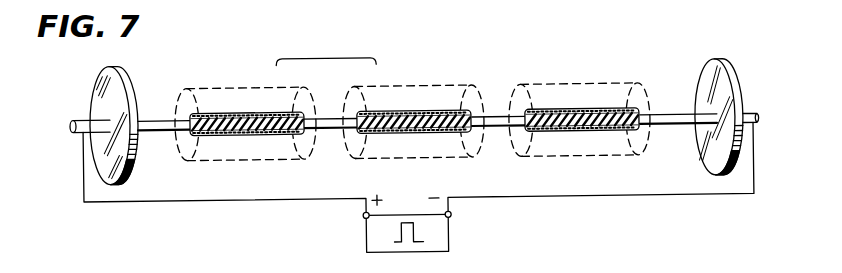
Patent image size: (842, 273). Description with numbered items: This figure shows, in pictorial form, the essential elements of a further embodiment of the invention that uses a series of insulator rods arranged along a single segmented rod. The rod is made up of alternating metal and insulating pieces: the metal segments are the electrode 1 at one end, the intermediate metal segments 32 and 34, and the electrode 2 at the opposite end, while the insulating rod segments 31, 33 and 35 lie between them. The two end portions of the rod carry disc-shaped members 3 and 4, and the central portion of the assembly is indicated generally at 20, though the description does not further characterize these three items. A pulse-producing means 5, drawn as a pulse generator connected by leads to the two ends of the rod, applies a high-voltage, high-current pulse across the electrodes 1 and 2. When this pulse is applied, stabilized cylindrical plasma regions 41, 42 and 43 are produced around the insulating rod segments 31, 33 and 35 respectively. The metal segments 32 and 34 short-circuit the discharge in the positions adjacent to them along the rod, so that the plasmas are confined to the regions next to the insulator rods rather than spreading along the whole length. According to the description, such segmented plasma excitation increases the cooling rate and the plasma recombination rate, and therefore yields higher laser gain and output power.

The electrode 1 is at (389, 109).
The electrode 2 is at (757, 96).
The first disc 3 is at (116, 115).
The second disc 4 is at (723, 105).
The pulse producing means 5 is at (419, 189).
The coupling section 20 is at (326, 48).
The insulating rod segment 31 is at (245, 112).
The metal segment 32 is at (329, 96).
The insulating rod segment 33 is at (413, 110).
The metal segment 34 is at (499, 146).
The insulating rod segment 35 is at (580, 135).
The stabilized cylindrical plasma region 41 is at (246, 99).
The stabilized cylindrical plasma region 42 is at (413, 95).
The stabilized cylindrical plasma region 43 is at (581, 93).